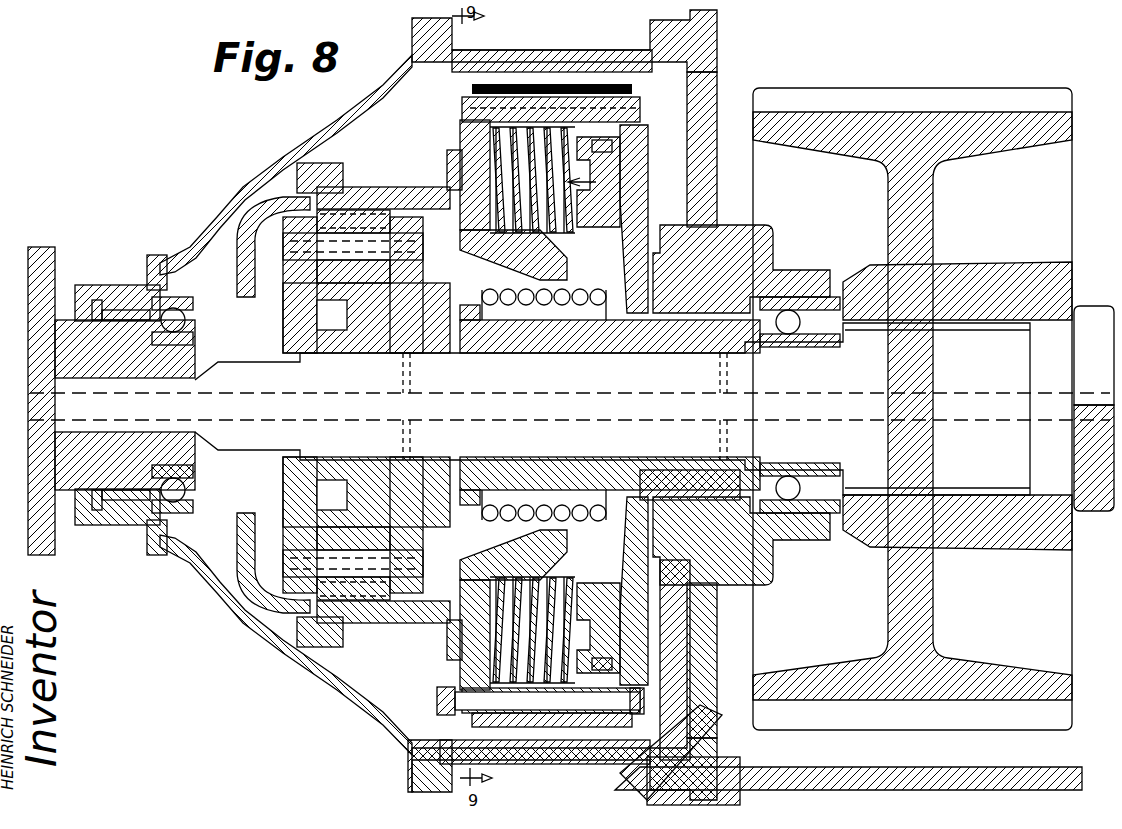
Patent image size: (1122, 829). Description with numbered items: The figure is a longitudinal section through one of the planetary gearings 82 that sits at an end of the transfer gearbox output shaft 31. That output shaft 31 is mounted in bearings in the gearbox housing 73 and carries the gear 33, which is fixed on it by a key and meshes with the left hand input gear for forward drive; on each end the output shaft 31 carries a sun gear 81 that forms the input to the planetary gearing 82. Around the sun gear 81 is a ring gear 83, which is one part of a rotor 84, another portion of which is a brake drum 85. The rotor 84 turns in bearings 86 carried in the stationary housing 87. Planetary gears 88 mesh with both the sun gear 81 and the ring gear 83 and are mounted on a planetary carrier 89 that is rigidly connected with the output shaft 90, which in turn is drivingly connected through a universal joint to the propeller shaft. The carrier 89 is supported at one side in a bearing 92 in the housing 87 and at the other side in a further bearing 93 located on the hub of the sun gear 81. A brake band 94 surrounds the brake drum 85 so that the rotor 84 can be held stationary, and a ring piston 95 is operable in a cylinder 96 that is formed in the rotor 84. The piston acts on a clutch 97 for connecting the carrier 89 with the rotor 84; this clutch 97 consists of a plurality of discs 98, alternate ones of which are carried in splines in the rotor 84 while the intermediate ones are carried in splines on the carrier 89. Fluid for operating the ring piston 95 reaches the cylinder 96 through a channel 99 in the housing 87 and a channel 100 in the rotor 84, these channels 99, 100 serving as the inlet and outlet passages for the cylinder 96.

The output shaft 31 is at (1084, 312).
The gear 33 is at (893, 93).
The housing 73 is at (858, 790).
The sun gear 81 is at (345, 352).
The planetary gearing 82 is at (292, 204).
The ring gear 83 is at (390, 200).
The rotor 84 is at (462, 135).
The brake drum 85 is at (466, 100).
The bearings 86 is at (212, 292).
The housing 87 is at (500, 58).
The planetary gears 88 is at (354, 222).
The planetary carrier 89 is at (290, 282).
The output shaft 90 is at (45, 354).
The bearing 92 is at (138, 290).
The bearing 93 is at (428, 326).
The brake band 94 is at (572, 92).
The ring piston 95 is at (622, 162).
The cylinder 96 is at (602, 140).
The clutch 97 is at (594, 181).
The discs 98 is at (492, 206).
The channel 99 is at (632, 772).
The channel 100 is at (652, 468).